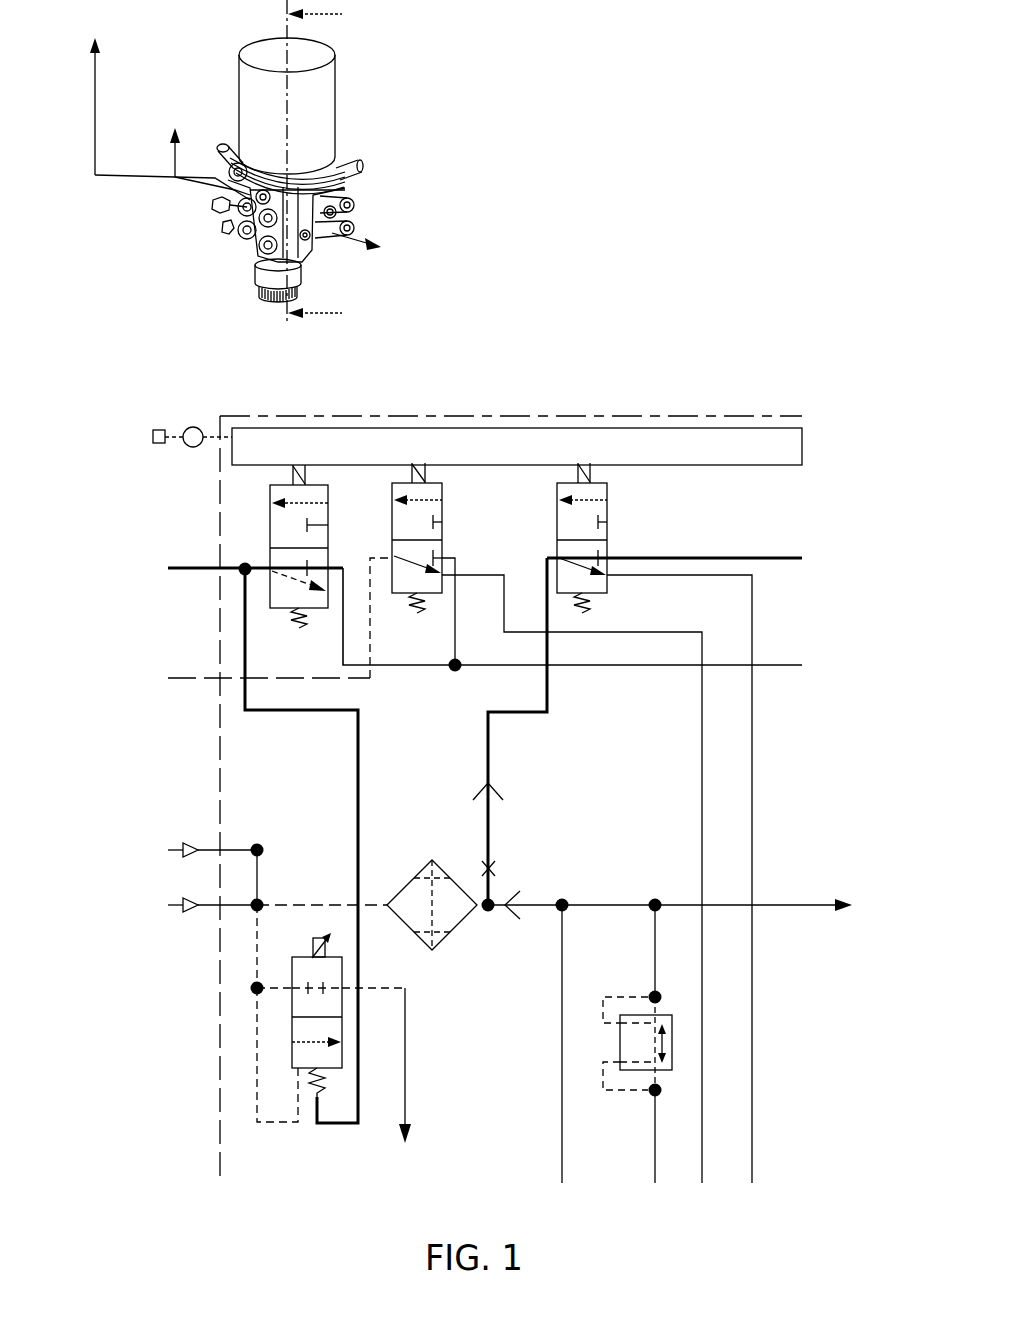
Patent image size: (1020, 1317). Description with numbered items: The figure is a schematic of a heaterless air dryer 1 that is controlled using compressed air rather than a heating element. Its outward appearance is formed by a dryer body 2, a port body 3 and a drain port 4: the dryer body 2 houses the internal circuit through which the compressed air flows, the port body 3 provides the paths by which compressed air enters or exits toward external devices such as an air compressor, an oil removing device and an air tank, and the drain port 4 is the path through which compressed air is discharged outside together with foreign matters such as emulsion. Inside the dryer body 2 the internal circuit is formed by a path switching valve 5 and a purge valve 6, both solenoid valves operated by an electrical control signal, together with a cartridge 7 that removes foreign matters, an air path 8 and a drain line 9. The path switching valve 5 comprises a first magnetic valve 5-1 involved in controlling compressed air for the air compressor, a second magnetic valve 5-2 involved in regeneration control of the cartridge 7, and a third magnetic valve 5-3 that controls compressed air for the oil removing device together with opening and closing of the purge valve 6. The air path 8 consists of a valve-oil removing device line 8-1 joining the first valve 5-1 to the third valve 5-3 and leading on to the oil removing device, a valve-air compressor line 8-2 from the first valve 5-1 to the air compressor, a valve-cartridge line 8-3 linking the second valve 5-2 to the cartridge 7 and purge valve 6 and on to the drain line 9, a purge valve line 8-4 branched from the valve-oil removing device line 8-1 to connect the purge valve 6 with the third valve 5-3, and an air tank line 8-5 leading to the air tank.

The air dryer 1 is at (398, 27).
The dryer body 2 is at (325, 88).
The port body 3 is at (353, 192).
The drain port 4 is at (255, 273).
The path switching valve 5 is at (638, 346).
The MV1 valve 5-1 is at (430, 483).
The MV2 valve 5-2 is at (597, 483).
The MV3 valve 5-3 is at (315, 485).
The purge valve 6 is at (292, 1032).
The cartridge 7 is at (432, 860).
The air path 8 is at (505, 835).
The valve-oil removing device line 8-1 is at (254, 566).
The valve-air compressor line 8-2 is at (233, 680).
The valve-cartridge line 8-3 is at (762, 557).
The purge valve line 8-4 is at (297, 712).
The air tank line 8-5 is at (210, 908).
The drain line 9 is at (407, 1125).